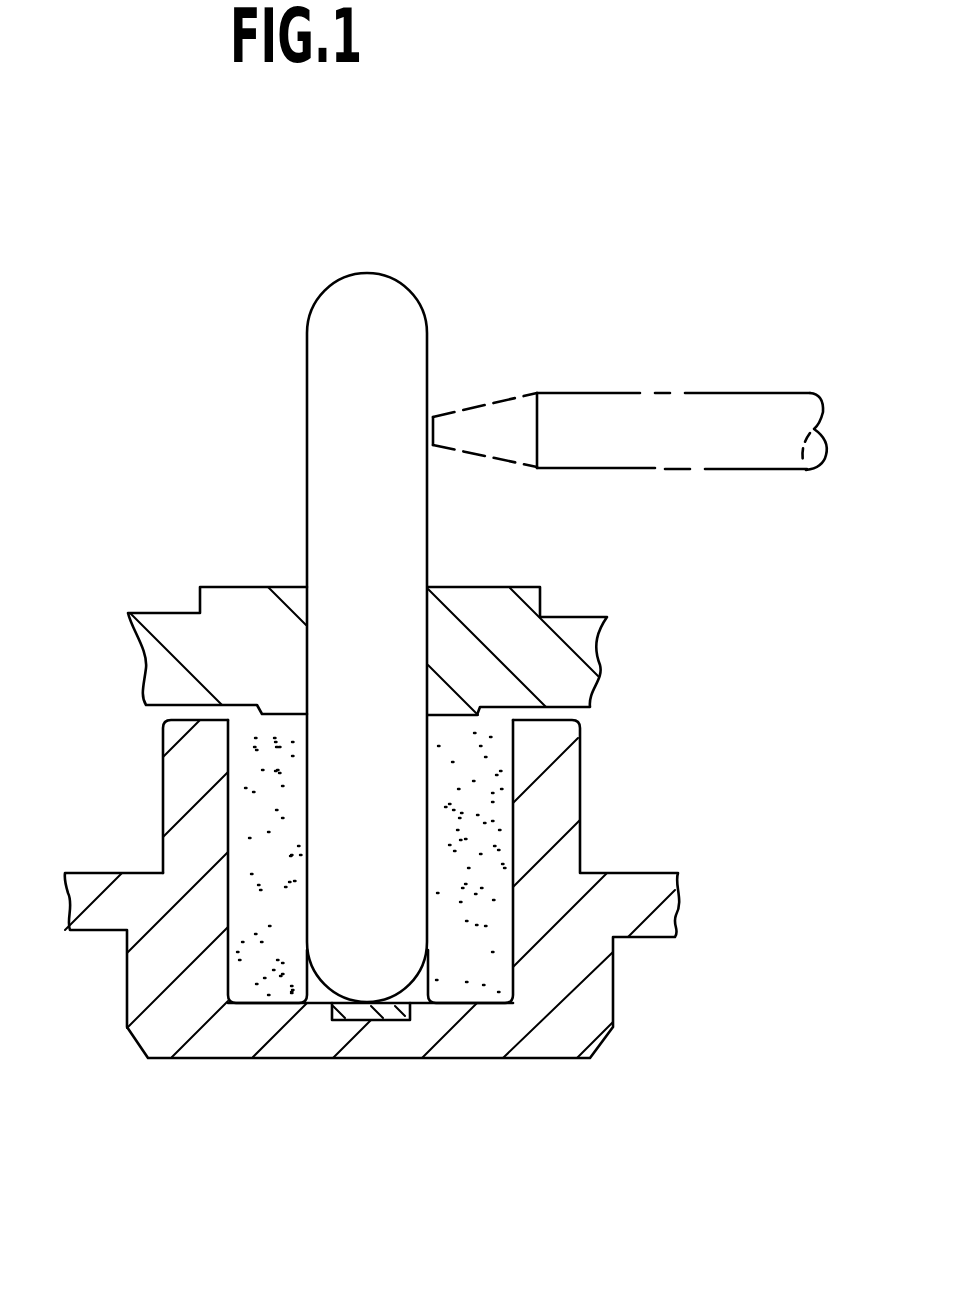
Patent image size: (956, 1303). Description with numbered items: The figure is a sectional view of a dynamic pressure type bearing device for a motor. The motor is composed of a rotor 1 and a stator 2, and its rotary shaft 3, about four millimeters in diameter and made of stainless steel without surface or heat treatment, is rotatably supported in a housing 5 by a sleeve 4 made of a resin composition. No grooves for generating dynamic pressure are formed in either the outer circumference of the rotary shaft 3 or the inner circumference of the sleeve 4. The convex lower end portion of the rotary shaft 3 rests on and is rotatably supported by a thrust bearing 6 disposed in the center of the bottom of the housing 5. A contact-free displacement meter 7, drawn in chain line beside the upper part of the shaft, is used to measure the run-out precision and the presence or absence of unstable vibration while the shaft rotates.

The rotor 1 is at (160, 625).
The stator 2 is at (176, 780).
The rotary shaft 3 is at (318, 363).
The sleeve 4 is at (487, 772).
The housing 5 is at (585, 998).
The thrust bearing 6 is at (390, 1020).
The contact-free displacement meter 7 is at (790, 393).